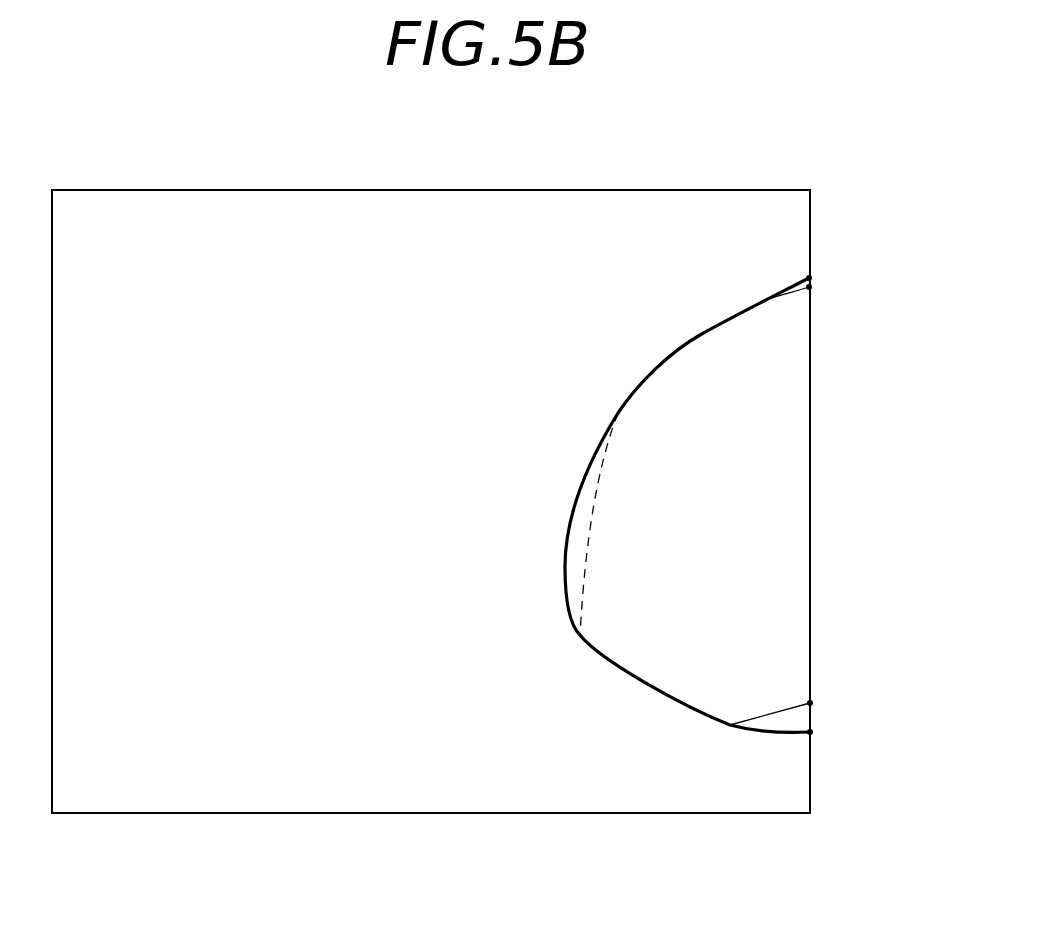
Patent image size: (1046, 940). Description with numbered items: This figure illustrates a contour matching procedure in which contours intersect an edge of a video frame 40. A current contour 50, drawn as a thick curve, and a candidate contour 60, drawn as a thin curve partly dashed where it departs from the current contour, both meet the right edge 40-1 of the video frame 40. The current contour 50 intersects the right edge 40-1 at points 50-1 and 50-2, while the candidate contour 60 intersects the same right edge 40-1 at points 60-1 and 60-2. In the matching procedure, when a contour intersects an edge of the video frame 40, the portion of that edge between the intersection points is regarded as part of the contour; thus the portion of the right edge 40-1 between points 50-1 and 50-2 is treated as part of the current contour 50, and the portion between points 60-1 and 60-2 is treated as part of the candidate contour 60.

The video frame 40 is at (682, 190).
The right edge 40-1 is at (810, 228).
The current contour 50 is at (578, 480).
The intersection point 50-1 is at (809, 278).
The intersection point 50-2 is at (810, 732).
The candidate contour 60 is at (592, 560).
The intersection point 60-1 is at (809, 287).
The intersection point 60-2 is at (810, 703).